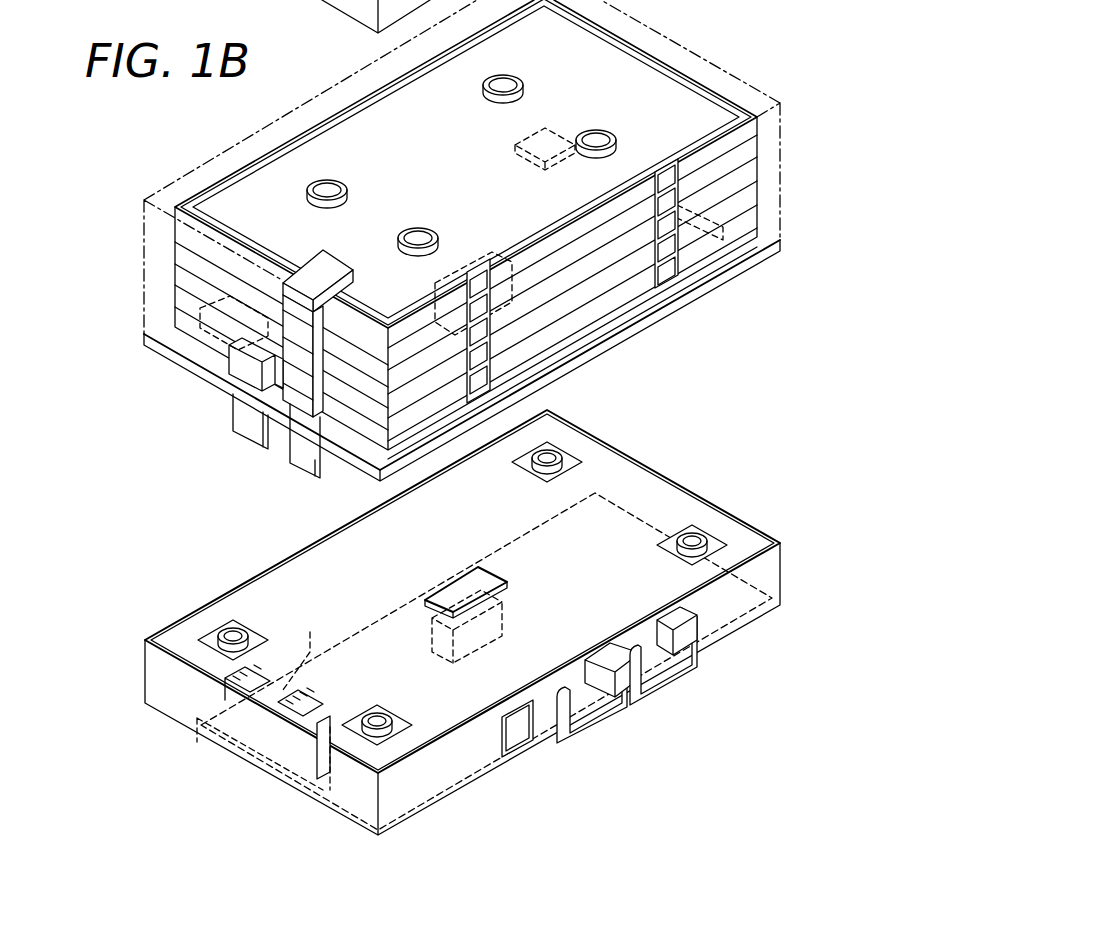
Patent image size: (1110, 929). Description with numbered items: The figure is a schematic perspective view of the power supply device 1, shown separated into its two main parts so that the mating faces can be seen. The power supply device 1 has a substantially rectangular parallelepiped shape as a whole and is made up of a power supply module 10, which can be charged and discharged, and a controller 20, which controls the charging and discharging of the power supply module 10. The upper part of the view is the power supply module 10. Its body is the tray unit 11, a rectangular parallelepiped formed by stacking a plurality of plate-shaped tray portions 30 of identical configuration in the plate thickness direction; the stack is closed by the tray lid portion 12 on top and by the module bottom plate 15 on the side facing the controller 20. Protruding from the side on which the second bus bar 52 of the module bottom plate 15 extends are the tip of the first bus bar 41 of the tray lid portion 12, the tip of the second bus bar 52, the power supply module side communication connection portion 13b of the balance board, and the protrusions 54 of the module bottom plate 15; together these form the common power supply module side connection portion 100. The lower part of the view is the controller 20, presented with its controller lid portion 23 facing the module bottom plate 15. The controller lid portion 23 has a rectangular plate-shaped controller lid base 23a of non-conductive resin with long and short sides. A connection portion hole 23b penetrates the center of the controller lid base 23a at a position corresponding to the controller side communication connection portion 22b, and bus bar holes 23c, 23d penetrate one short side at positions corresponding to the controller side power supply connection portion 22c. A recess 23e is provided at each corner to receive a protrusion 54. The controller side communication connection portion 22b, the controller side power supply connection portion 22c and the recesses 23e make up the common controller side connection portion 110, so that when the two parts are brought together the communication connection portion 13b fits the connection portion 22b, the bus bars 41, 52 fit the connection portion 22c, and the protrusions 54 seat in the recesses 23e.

The power supply device 1 is at (463, 417).
The power supply module 10 is at (135, 245).
The tray unit 11 is at (539, 288).
The tray lid portion 12 is at (697, 105).
The power supply module side communication connection portion 13b is at (462, 250).
The module bottom plate 15 is at (752, 234).
The controller 20 is at (134, 672).
The controller side communication connection portion 22b is at (503, 613).
The controller side power supply connection portion 22c is at (308, 631).
The controller lid portion 23 is at (604, 470).
The controller lid base 23a is at (656, 492).
The connection portion hole 23b is at (458, 588).
The bus bar hole 23c is at (247, 675).
The bus bar hole 23d is at (305, 704).
The recess 23e is at (306, 706).
The tray portion 30 is at (755, 135).
The first bus bar 41 is at (243, 433).
The second bus bar 52 is at (300, 464).
The protrusion 54 is at (540, 122).
The power supply module side connection portion 100 is at (415, 304).
The controller side connection portion 110 is at (385, 702).